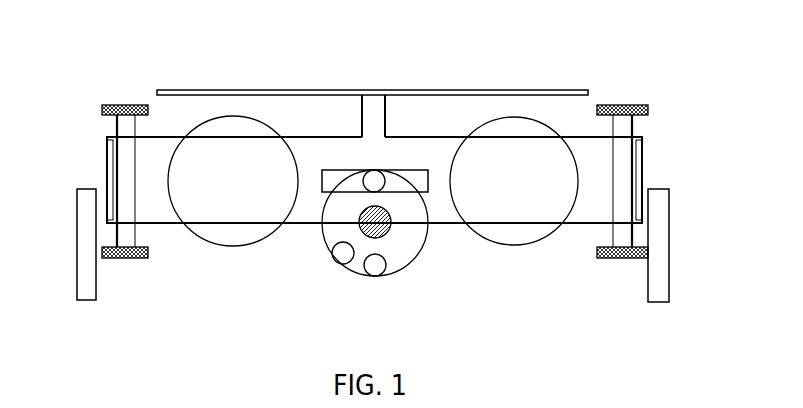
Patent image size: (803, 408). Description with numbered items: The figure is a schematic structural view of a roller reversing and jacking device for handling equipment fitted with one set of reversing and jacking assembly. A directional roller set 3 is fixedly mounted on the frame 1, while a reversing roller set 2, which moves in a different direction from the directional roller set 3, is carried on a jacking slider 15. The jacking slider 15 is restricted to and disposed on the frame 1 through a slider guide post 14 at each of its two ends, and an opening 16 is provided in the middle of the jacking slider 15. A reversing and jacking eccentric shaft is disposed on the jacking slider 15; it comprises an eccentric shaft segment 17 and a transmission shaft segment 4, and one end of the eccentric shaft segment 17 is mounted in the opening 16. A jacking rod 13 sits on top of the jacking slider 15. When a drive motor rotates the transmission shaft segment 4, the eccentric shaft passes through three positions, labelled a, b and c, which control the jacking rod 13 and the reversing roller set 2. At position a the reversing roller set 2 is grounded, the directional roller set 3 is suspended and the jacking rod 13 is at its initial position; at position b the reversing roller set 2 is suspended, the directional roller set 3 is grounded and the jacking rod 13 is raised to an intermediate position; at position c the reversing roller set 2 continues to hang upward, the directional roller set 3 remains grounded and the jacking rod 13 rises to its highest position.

The frame 1 is at (625, 106).
The reversing roller set 2 is at (238, 133).
The directional roller set 3 is at (90, 228).
The transmission shaft segment 4 is at (382, 233).
The jacking rod 13 is at (373, 105).
The slider guide post 14 is at (128, 157).
The jacking slider 15 is at (167, 213).
The opening 16 is at (328, 172).
The eccentric shaft segment 17 is at (388, 172).